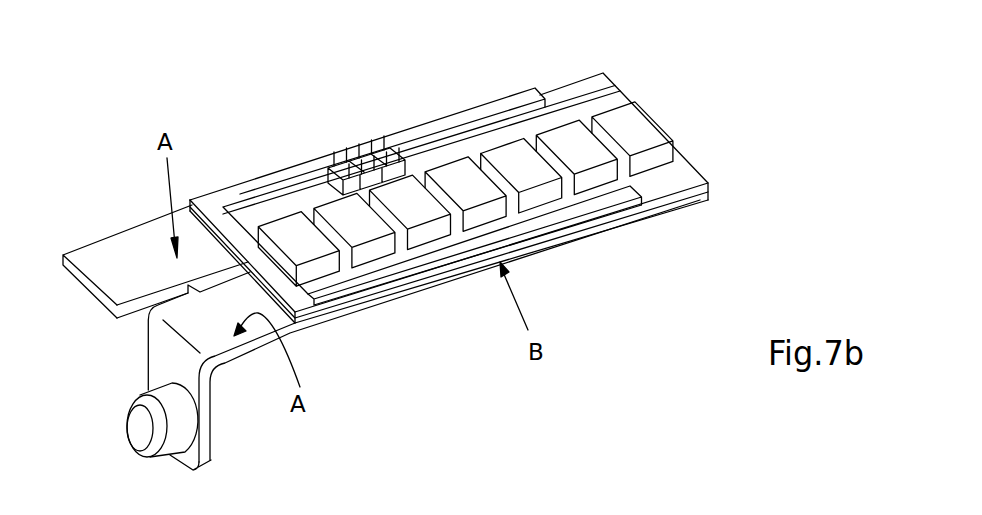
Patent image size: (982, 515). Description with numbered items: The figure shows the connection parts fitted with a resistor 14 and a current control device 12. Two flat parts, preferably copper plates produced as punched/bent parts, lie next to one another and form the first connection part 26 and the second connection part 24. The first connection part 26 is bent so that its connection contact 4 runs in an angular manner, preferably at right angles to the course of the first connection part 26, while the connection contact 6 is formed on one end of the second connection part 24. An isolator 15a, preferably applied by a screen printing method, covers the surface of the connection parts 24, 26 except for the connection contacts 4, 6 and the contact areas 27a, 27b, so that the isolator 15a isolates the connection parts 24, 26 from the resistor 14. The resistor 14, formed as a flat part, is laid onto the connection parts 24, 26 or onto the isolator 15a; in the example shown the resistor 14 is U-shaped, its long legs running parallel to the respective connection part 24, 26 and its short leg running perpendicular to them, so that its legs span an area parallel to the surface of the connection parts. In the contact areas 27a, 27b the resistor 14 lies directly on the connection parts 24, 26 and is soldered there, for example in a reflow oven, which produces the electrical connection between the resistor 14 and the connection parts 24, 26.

The connection contact 4 is at (205, 432).
The connection contact 6 is at (97, 272).
The electronic component 12 is at (647, 134).
The resistor 14 is at (386, 282).
The isolator 15a is at (585, 98).
The second connection part 24 is at (133, 252).
The first connection part 26 is at (352, 315).
The contact area 27a is at (517, 95).
The contact area 27b is at (622, 223).